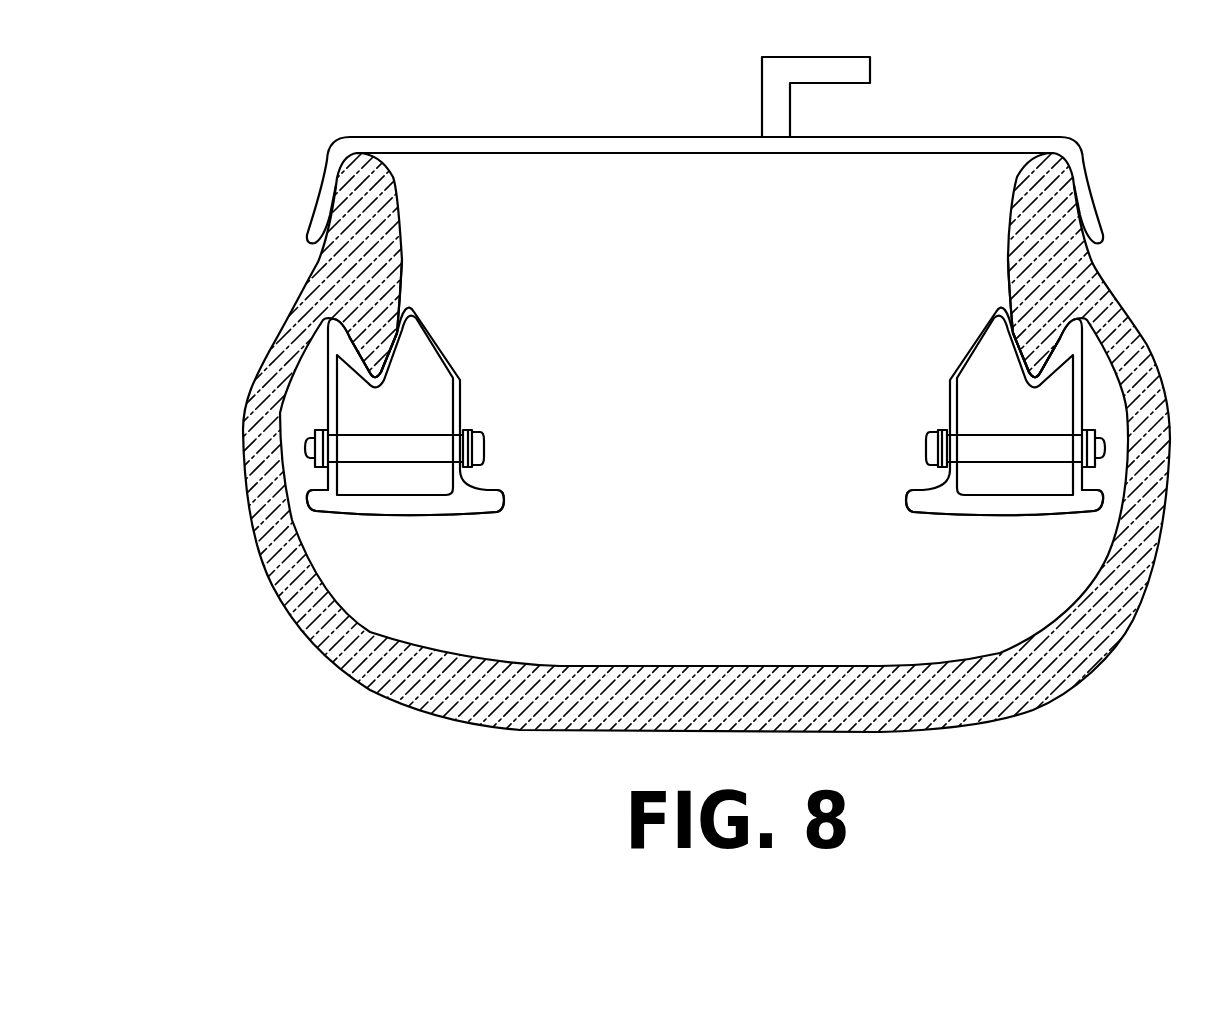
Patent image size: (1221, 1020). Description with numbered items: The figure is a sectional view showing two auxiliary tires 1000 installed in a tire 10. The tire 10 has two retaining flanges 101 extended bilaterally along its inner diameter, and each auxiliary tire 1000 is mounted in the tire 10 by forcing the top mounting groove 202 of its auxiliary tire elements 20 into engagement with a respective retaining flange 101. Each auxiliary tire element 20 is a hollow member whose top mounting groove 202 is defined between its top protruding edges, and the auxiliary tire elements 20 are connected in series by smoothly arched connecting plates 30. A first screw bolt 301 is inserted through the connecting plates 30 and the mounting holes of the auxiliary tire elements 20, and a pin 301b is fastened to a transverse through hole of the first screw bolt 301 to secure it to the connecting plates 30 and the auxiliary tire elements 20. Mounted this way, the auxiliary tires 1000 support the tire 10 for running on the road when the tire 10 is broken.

The tire 10 is at (320, 635).
The retaining flange 101 is at (373, 320).
The auxiliary tire element 20 is at (467, 403).
The top mounting groove 202 is at (1017, 333).
The connecting plate 30 is at (620, 394).
The first screw bolt 301 is at (487, 450).
The pin 301b is at (231, 415).
The auxiliary tire 1000 is at (470, 543).